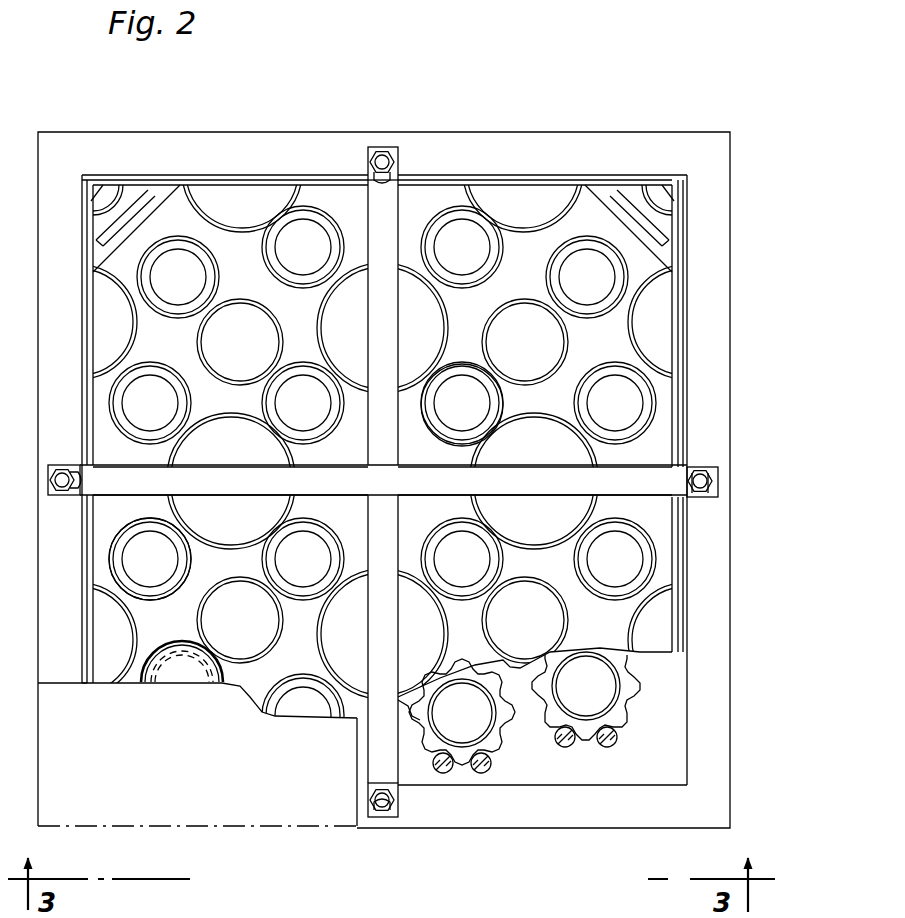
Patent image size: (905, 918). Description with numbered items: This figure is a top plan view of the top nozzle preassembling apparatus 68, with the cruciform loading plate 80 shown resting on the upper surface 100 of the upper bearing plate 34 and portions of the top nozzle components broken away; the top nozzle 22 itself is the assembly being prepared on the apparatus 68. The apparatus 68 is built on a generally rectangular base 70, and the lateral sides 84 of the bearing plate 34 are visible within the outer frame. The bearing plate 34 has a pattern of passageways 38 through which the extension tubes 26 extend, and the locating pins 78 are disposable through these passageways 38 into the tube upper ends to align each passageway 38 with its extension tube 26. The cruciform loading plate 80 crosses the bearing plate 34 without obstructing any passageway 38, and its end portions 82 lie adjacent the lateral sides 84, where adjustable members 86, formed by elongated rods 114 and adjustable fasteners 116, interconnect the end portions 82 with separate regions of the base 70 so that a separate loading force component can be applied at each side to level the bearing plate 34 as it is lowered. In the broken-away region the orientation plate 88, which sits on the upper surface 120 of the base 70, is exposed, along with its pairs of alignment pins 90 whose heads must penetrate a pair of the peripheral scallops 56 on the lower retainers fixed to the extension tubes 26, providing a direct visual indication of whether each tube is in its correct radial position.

The tray 22 is at (382, 481).
The extension tube 26 is at (450, 426).
The upper bearing plate 34 is at (90, 628).
The passageway 38 is at (462, 364).
The peripheral scallops 56 is at (516, 665).
The preassembling apparatus 68 is at (608, 120).
The base 70 is at (730, 698).
The pin 78 is at (170, 672).
The cruciform loading plate 80 is at (400, 344).
The end portion 82 is at (376, 149).
The lateral side 84 is at (474, 180).
The adjustable member 86 is at (385, 150).
The orientation plate 88 is at (690, 782).
The alignment pin 90 is at (432, 770).
The upper surface 100 is at (636, 655).
The elongated rod 114 is at (396, 162).
The adjustable fastener 116 is at (370, 178).
The upper surface 120 is at (624, 788).